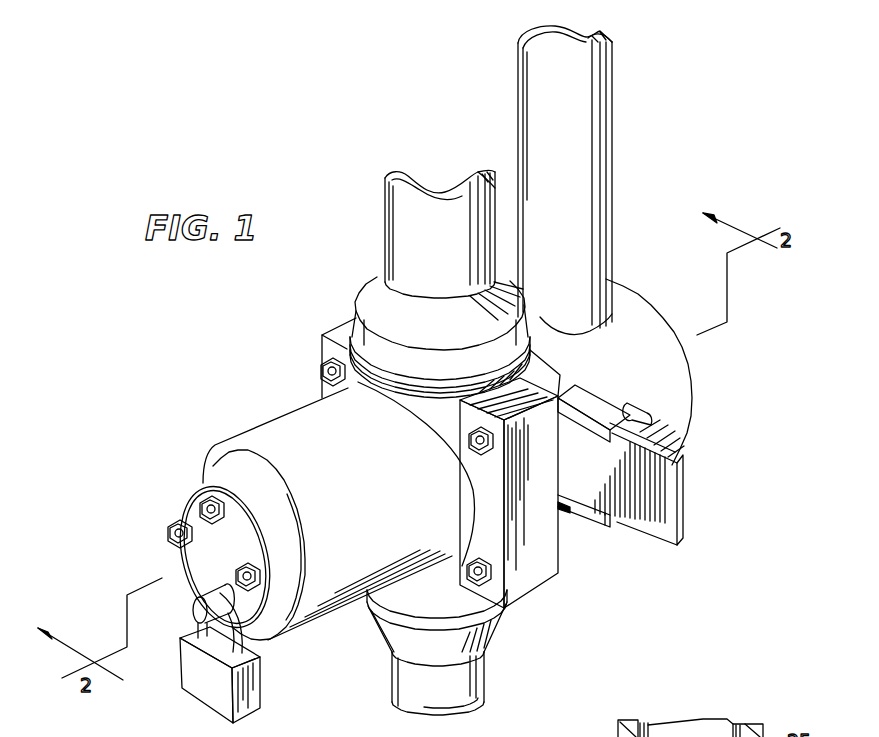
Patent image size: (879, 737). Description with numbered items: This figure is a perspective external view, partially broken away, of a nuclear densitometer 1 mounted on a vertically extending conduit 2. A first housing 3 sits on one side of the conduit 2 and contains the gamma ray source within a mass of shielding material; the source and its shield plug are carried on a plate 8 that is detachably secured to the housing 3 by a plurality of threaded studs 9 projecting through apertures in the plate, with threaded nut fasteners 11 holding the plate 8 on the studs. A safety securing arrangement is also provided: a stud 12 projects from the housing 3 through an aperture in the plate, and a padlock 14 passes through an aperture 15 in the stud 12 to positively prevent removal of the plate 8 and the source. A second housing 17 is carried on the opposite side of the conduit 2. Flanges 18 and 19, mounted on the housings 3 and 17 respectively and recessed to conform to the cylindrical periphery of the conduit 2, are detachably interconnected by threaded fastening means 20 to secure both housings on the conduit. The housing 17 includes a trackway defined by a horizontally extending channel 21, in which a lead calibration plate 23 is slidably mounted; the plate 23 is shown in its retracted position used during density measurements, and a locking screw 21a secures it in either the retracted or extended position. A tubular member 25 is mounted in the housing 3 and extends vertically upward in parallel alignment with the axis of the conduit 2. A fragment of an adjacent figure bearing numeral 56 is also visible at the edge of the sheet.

The nuclear densitometer 1 is at (296, 355).
The conduit 2 is at (417, 570).
The first housing 3 is at (275, 428).
The plate 8 is at (192, 495).
The threaded studs 9 is at (200, 513).
The threaded nut fasteners 11 is at (168, 532).
The stud 12 is at (193, 612).
The padlock 14 is at (240, 640).
The aperture 15 is at (219, 588).
The second housing 17 is at (678, 366).
The flange 18 is at (517, 590).
The flange 19 is at (543, 573).
The threaded fastening means 20 is at (495, 620).
The channel 21 is at (583, 395).
The locking screw 21a is at (638, 403).
The calibration plate 23 is at (681, 510).
The tubular member 25 is at (597, 173).
The member 56 is at (745, 722).